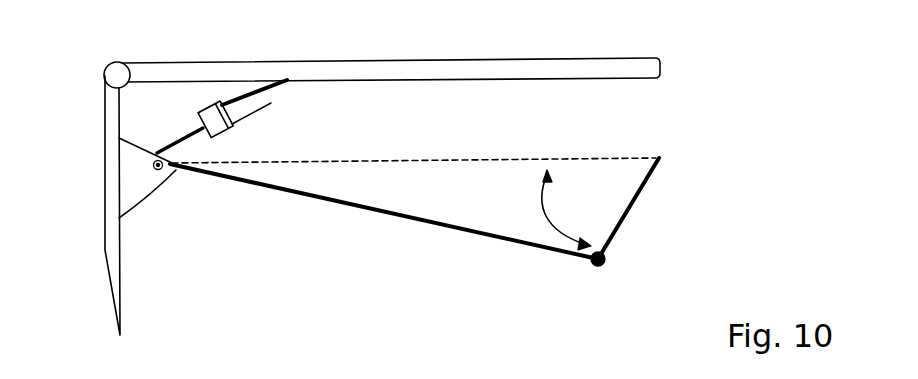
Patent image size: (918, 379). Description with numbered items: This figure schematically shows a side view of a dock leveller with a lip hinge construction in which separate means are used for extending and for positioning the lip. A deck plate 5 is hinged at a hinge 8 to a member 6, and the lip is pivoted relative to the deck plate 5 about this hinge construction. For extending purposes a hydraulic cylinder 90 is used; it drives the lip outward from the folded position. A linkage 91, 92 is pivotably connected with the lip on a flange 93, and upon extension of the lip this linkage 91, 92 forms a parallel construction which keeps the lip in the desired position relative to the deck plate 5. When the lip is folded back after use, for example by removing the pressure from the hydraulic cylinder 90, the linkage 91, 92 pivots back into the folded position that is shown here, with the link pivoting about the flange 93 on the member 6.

The arm 5 is at (436, 58).
The post 6 is at (105, 168).
The hinge 8 is at (107, 67).
The hydraulic cylinder 90 is at (172, 142).
The linkage 91 is at (350, 208).
The linkage 92 is at (632, 208).
The flange 93 is at (148, 200).